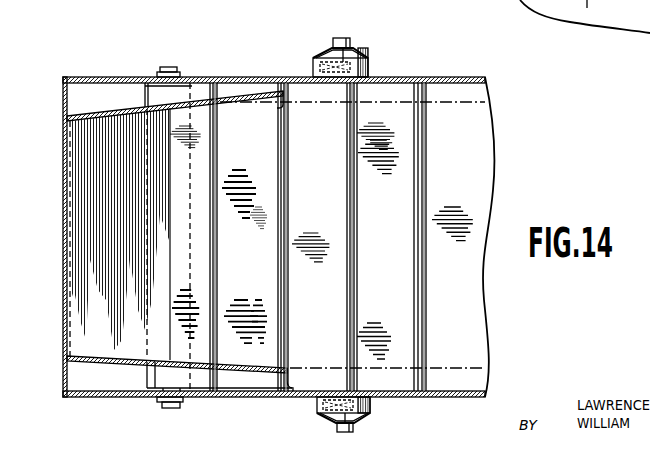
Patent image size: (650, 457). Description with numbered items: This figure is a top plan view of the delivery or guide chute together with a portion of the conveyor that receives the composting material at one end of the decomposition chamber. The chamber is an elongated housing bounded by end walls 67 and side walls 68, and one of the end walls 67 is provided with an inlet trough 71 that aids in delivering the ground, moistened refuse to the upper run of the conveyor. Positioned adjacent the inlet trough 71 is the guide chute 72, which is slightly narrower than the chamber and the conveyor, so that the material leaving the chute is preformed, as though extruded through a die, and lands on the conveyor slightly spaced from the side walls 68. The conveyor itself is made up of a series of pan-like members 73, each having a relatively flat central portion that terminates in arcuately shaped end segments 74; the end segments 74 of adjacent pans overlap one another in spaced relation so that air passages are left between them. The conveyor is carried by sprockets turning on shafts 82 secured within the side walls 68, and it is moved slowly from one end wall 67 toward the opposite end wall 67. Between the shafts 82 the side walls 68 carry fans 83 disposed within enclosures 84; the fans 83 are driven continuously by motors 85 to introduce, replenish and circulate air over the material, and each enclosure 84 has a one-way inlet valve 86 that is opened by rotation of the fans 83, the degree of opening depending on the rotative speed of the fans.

The end wall 67 is at (66, 296).
The side wall 68 is at (447, 424).
The inlet trough 71 is at (104, 232).
The guide chute 72 is at (99, 112).
The pan-like member 73 is at (392, 257).
The arcuately shaped end segment 74 is at (415, 306).
The shaft 82 is at (175, 218).
The fan 83 is at (365, 55).
The enclosure 84 is at (313, 68).
The motor 85 is at (343, 40).
The one-way inlet valve 86 is at (333, 50).